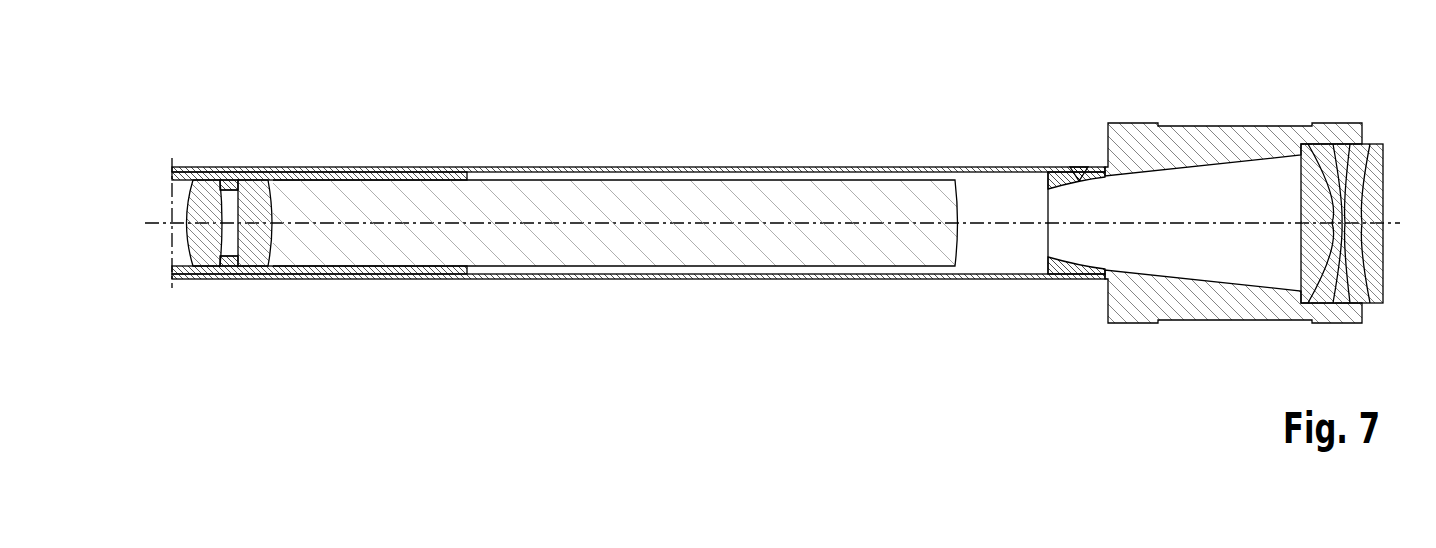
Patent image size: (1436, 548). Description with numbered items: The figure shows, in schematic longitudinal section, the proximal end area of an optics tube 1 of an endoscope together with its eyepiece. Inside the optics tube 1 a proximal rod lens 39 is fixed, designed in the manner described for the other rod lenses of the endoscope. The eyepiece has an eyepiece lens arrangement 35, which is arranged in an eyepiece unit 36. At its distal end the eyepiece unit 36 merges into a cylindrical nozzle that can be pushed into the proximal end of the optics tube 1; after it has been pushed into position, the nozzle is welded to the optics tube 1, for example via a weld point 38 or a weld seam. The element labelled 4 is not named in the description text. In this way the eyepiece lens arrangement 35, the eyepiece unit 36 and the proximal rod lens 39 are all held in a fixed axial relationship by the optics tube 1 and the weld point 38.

The optics tube 1 is at (638, 186).
The lens system 4 is at (150, 222).
The eyepiece lens arrangement 35 is at (1380, 128).
The eyepiece unit 36 is at (1205, 137).
The weld point 38 is at (1077, 60).
The proximal rod lens 39 is at (663, 166).